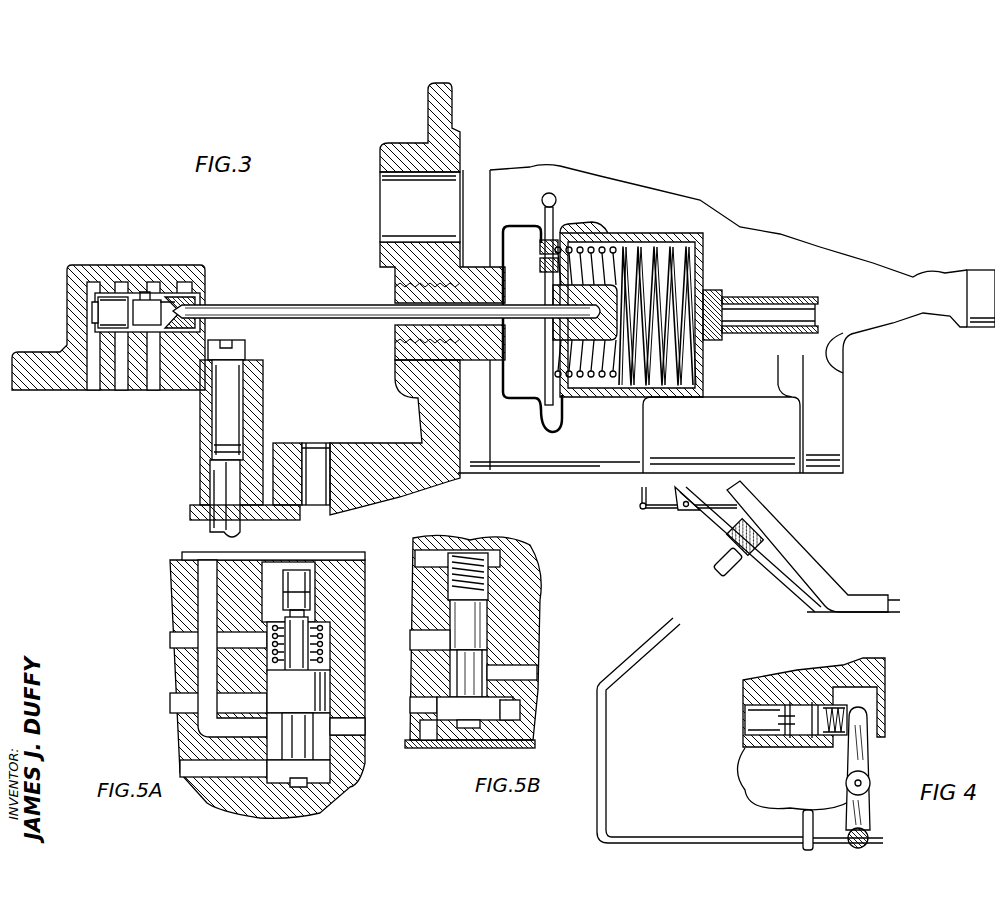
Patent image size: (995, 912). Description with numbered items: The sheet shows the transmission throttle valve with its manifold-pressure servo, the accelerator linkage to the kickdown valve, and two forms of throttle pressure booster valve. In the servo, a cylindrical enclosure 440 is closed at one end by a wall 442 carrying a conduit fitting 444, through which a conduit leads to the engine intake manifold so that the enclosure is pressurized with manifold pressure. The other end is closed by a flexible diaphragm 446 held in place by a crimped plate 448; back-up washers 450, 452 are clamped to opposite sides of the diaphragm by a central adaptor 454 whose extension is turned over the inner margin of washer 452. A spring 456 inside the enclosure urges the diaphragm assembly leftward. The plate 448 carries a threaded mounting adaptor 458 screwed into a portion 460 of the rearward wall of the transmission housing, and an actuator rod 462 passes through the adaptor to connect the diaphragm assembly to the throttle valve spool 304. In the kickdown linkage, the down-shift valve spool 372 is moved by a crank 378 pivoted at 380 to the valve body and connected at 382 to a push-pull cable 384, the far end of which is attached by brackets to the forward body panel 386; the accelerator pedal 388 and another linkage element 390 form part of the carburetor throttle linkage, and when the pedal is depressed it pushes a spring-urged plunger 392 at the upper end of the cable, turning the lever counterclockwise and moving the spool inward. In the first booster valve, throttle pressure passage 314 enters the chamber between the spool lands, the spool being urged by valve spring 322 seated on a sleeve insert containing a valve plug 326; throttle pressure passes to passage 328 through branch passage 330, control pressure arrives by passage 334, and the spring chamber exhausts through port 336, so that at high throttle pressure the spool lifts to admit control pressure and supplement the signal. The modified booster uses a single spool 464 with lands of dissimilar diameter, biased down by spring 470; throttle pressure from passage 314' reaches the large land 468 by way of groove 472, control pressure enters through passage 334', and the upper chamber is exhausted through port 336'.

In FIG. 3, the valve spool 304 is at (153, 318).
In FIG. 5A, the throttle pressure passage 314 is at (233, 762).
In FIG. 5B, the throttle pressure passage 314' is at (403, 704).
In FIG. 5A, the valve spring 322 is at (325, 648).
In FIG. 5A, the valve plug 326 is at (302, 590).
In FIG. 5A, the passage 328 is at (212, 730).
In FIG. 5B, the passage 328 is at (532, 675).
In FIG. 5A, the branch passage 330 is at (355, 737).
In FIG. 5A, the control pressure passage 334 is at (198, 699).
In FIG. 5B, the control pressure passage 334' is at (415, 625).
In FIG. 5A, the exhaust port 336 is at (202, 629).
In FIG. 5B, the exhaust port 336' is at (457, 540).
In FIG. 4, the down-shift valve spool 372 is at (800, 705).
In FIG. 4, the crank 378 is at (865, 752).
In FIG. 4, the pivot 380 is at (846, 785).
In FIG. 4, the connection 382 is at (870, 845).
In FIG. 4, the push-pull cable 384 is at (838, 845).
In FIG. 4, the forward body panel 386 is at (775, 585).
In FIG. 4, the accelerator pedal 388 is at (775, 525).
In FIG. 4, the linkage element 390 is at (670, 505).
In FIG. 4, the plunger 392 is at (770, 540).
In FIG. 3, the enclosure 440 is at (690, 235).
In FIG. 3, the wall 442 is at (700, 273).
In FIG. 3, the conduit fitting 444 is at (808, 273).
In FIG. 3, the flexible diaphragm 446 is at (598, 211).
In FIG. 5B, the flexible diaphragm 446 is at (475, 630).
In FIG. 3, the crimped plate 448 is at (540, 226).
In FIG. 3, the diaphragm back-up washer 450 is at (548, 251).
In FIG. 3, the diaphragm back-up washer 452 is at (548, 268).
In FIG. 3, the adaptor 454 is at (550, 335).
In FIG. 3, the spring 456 is at (655, 245).
In FIG. 3, the threaded mounting adaptor 458 is at (468, 262).
In FIG. 3, the portion of rearward wall structure 460 is at (447, 134).
In FIG. 3, the throttle valve actuator rod 462 is at (362, 318).
In FIG. 5B, the valve spool 464 is at (470, 678).
In FIG. 5B, the valve land 468 is at (485, 712).
In FIG. 5B, the valve spring 470 is at (500, 521).
In FIG. 5B, the groove 472 is at (425, 735).